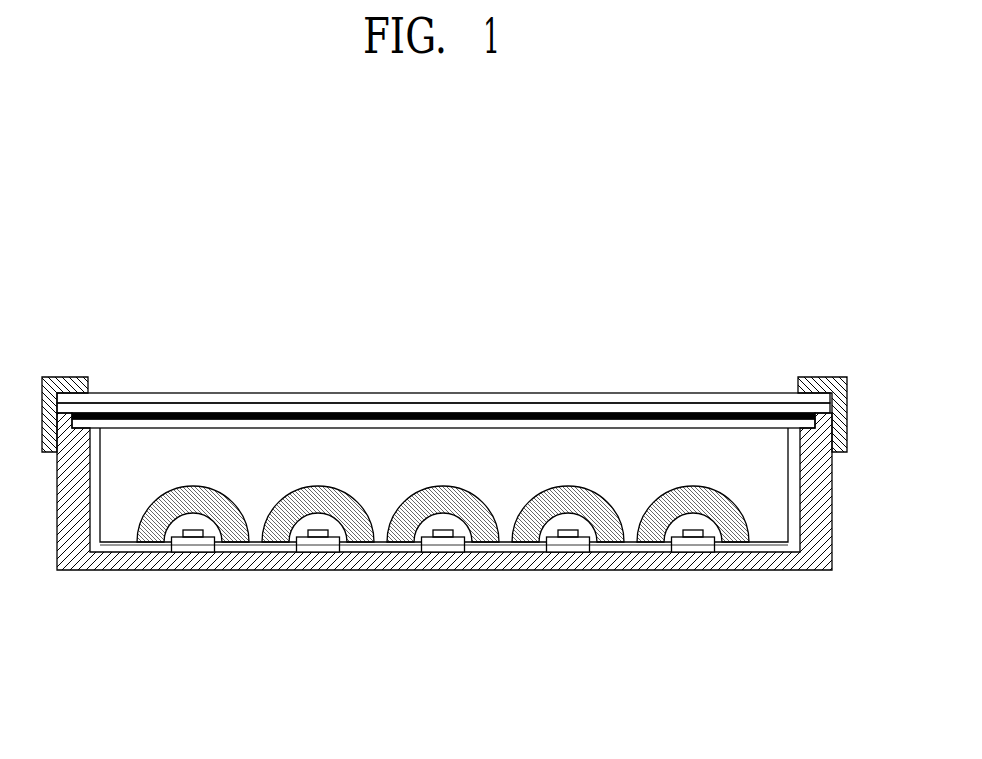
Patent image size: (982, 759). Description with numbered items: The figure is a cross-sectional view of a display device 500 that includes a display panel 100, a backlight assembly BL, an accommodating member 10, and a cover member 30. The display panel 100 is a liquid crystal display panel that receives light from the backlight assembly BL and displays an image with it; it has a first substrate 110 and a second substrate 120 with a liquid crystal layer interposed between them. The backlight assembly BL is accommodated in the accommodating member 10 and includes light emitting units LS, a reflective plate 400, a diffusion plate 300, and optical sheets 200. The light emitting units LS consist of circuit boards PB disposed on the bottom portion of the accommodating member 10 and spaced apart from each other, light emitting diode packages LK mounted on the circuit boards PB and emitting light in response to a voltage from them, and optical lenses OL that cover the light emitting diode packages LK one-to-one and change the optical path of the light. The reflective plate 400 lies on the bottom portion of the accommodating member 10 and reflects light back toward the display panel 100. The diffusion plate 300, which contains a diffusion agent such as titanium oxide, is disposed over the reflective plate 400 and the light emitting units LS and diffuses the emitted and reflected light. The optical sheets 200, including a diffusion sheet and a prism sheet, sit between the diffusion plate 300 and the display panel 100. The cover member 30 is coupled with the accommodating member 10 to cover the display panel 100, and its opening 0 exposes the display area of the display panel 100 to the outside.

The display device 500 is at (681, 244).
The backlight assembly 0 is at (706, 367).
The cover member 30 is at (822, 377).
The accommodating member 10 is at (603, 556).
The display panel 100 is at (443, 349).
The first substrate 110 is at (262, 327).
The second substrate 120 is at (238, 397).
The optical sheets 200 is at (351, 417).
The diffusion plate 300 is at (453, 425).
The reflective plate 400 is at (251, 543).
The backlight assembly BL is at (444, 596).
The light emitting units LS is at (438, 577).
The optical lenses OL is at (150, 539).
The circuit boards PB is at (188, 539).
The light emitting diode packages LK is at (203, 549).